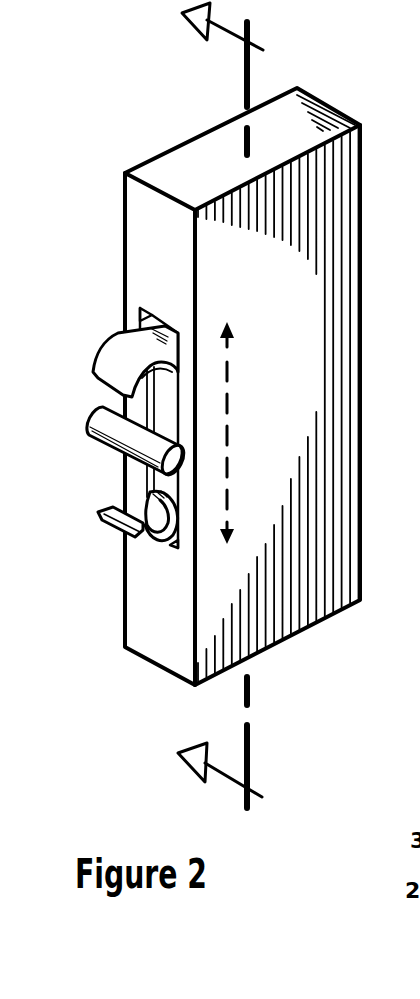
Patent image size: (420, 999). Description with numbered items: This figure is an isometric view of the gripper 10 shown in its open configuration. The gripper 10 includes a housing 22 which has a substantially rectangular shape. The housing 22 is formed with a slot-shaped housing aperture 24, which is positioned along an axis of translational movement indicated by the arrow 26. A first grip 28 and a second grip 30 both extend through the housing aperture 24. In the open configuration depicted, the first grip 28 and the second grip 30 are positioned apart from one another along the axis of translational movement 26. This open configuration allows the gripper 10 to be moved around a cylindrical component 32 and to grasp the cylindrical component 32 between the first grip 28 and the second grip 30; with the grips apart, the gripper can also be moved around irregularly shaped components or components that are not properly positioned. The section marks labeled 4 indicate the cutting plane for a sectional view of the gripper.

The gripper 10 is at (90, 124).
The housing 22 is at (348, 590).
The housing aperture 24 is at (167, 407).
The axis of translational movement 26 is at (228, 372).
The first grip 28 is at (97, 350).
The second grip 30 is at (97, 522).
The cylindrical component 32 is at (87, 418).
The section line of FIG. 4 is at (220, 405).